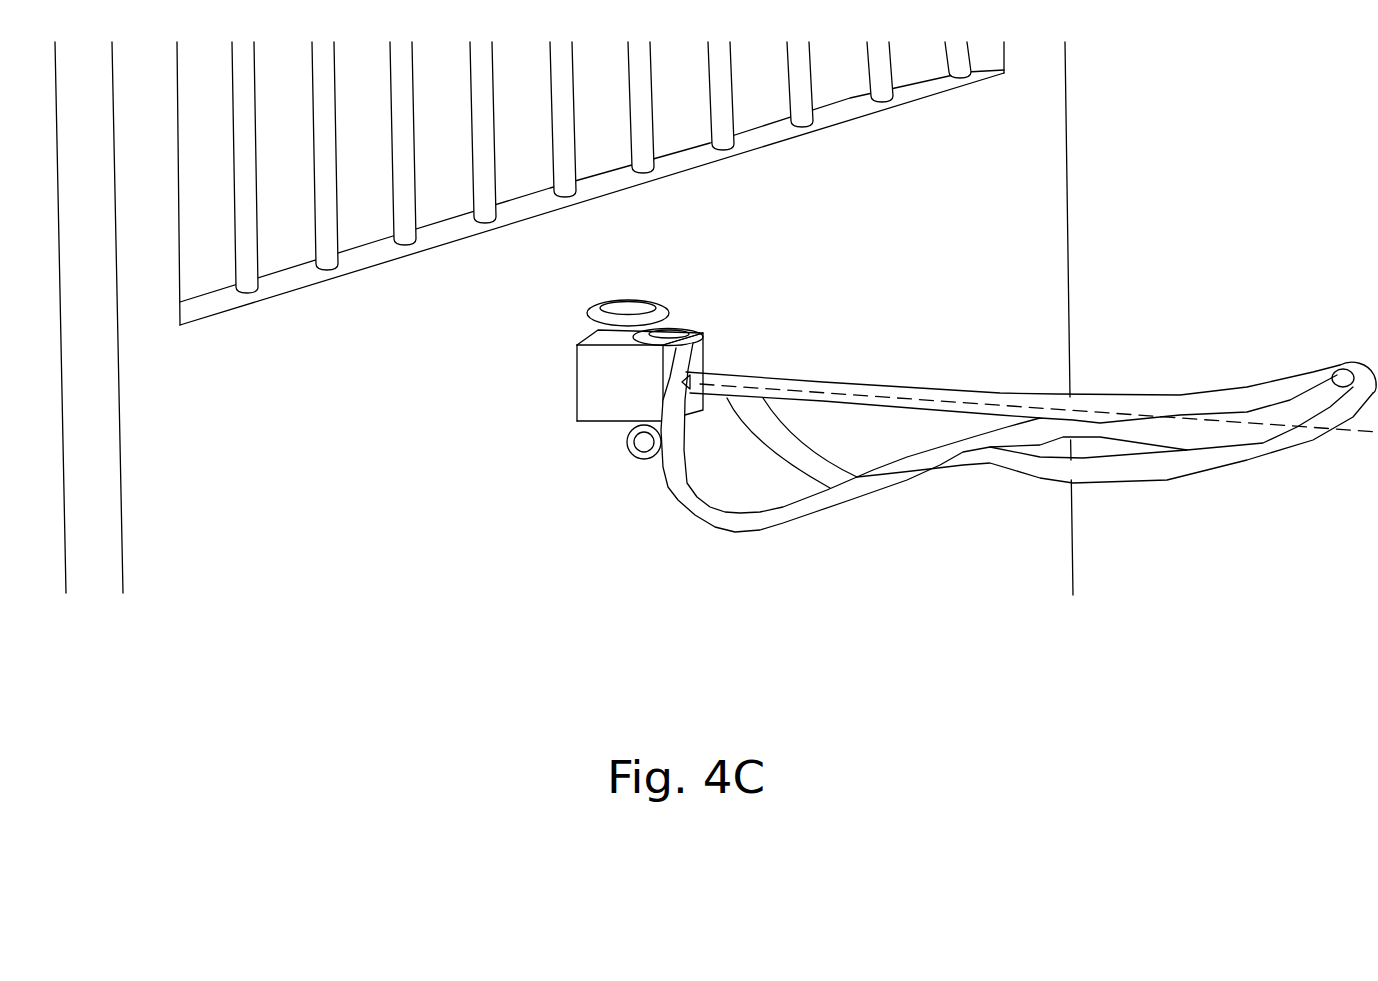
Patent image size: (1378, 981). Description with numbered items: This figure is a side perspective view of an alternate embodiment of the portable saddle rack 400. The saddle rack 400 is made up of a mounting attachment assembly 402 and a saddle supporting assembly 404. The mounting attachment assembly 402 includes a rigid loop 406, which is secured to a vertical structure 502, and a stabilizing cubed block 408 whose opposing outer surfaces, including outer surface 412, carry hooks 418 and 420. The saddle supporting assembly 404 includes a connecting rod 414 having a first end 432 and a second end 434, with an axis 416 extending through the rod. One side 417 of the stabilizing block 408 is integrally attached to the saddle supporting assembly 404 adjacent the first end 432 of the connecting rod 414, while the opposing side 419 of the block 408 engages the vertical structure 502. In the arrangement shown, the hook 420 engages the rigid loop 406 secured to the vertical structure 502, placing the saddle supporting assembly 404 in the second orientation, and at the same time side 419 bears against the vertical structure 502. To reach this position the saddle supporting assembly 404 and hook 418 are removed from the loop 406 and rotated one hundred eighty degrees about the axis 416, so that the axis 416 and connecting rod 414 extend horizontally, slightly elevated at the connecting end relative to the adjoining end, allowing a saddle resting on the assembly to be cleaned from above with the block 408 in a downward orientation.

The saddle rack 400 is at (919, 433).
The mounting attachment assembly 402 is at (596, 424).
The saddle supporting assembly 404 is at (948, 362).
The rigid loop 406 is at (595, 310).
The stabilizing cubed block 408 is at (592, 382).
The outer surface 412 is at (580, 340).
The connecting rod 414 is at (1053, 398).
The axis 416 is at (823, 392).
The side of stabilizing block 417 is at (693, 337).
The hook 418 is at (643, 455).
The opposing side of stabilizing block 419 is at (576, 366).
The hook 420 is at (640, 298).
The first end 432 is at (690, 366).
The second end 434 is at (1353, 362).
The vertical structure 502 is at (1053, 124).